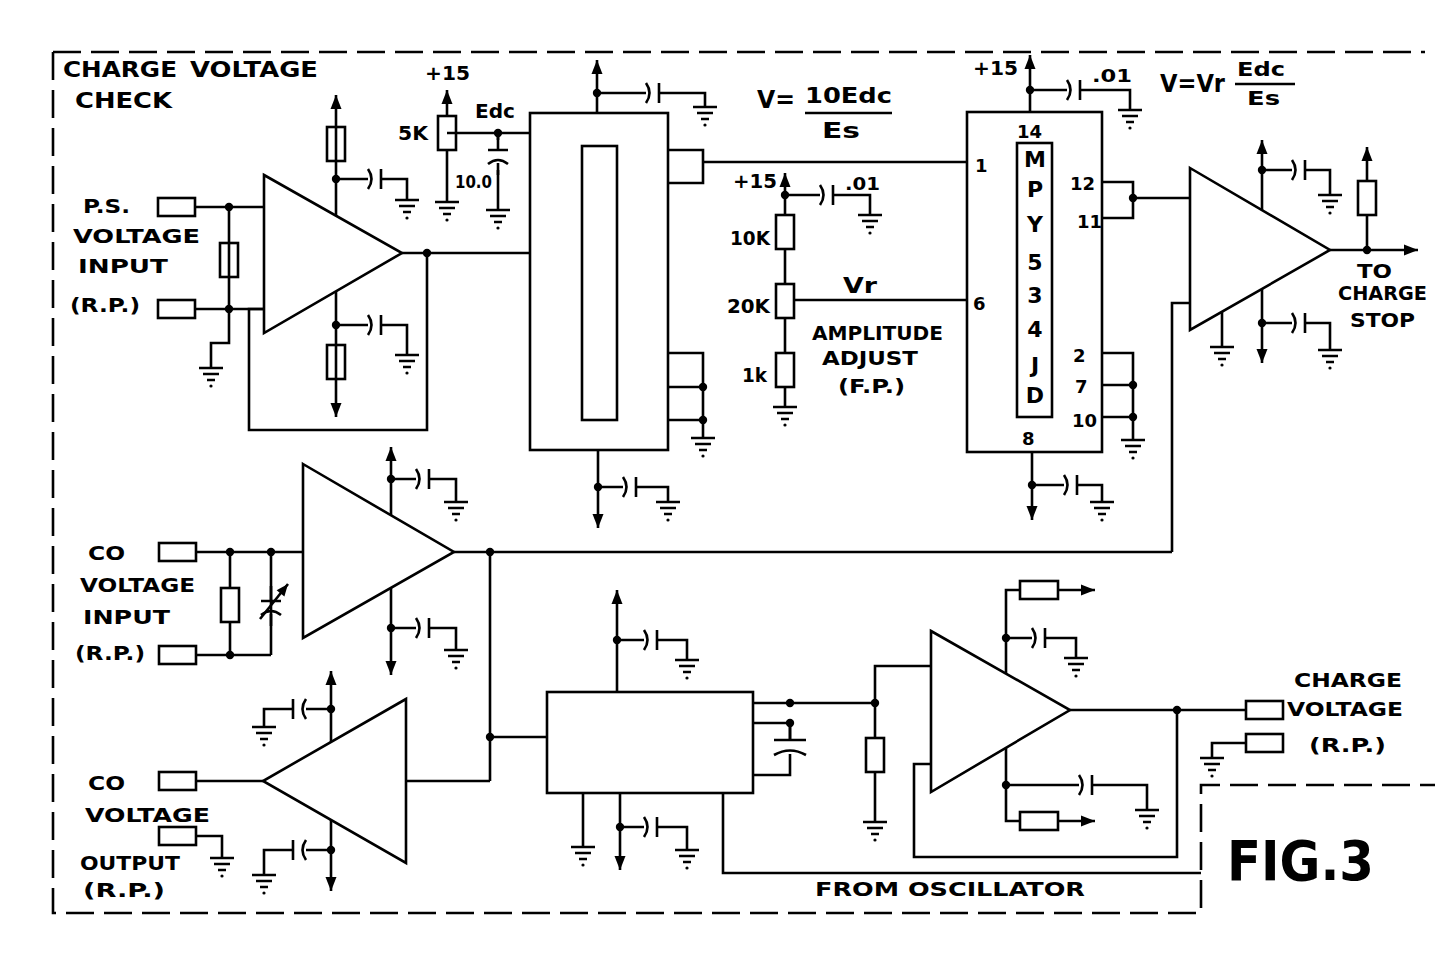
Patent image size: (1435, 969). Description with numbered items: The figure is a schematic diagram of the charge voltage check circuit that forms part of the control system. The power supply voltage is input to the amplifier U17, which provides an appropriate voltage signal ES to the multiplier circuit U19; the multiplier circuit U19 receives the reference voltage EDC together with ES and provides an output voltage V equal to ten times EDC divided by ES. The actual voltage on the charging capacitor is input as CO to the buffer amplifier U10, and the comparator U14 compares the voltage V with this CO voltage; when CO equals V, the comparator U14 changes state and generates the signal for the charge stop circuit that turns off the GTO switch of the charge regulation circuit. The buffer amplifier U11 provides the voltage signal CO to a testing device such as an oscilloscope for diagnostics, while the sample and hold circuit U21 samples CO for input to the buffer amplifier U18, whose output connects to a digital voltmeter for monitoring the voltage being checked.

The amplifier U17 is at (344, 256).
The multiplier circuit U19 is at (748, 296).
The comparator U14 is at (1295, 332).
The buffer amplifier U10 is at (665, 613).
The buffer amplifier U11 is at (324, 775).
The sample and hold circuit U21 is at (874, 736).
The buffer amplifier U18 is at (1080, 706).